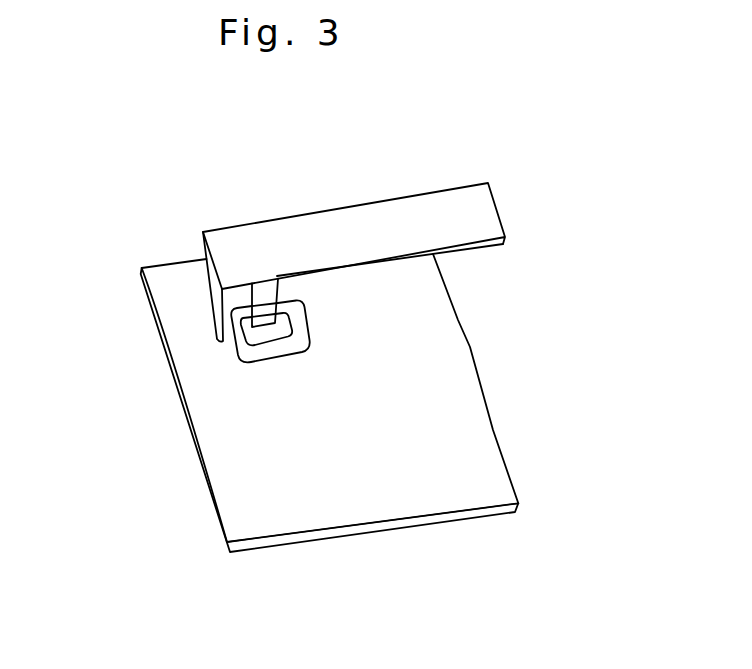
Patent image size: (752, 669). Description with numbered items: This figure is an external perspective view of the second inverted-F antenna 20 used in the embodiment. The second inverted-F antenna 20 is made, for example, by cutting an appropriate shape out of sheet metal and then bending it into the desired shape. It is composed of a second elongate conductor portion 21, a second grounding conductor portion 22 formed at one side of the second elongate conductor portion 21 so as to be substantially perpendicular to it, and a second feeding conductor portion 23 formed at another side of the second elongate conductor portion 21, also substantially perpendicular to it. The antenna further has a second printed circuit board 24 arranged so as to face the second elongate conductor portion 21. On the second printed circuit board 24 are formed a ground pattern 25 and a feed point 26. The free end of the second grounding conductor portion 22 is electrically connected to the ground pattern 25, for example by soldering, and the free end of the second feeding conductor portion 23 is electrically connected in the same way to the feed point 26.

The second inverted-F antenna 20 is at (291, 153).
The second elongate conductor portion 21 is at (355, 225).
The second grounding conductor portion 22 is at (208, 280).
The second feeding conductor portion 23 is at (267, 298).
The second printed circuit board 24 is at (493, 424).
The ground pattern 25 is at (385, 495).
The feed point 26 is at (257, 333).